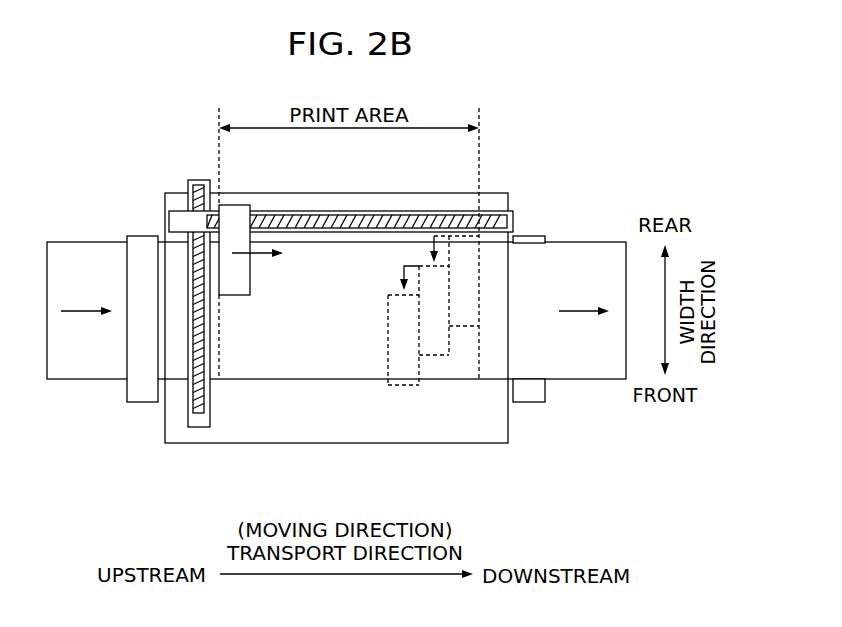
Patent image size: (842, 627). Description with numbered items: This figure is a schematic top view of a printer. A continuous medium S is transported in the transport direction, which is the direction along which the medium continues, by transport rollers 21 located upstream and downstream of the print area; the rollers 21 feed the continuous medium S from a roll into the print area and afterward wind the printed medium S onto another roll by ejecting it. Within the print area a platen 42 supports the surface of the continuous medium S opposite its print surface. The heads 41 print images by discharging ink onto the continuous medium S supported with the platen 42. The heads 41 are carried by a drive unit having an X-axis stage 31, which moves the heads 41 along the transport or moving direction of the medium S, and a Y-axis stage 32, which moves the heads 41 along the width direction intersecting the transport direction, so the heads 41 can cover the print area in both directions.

The continuous medium S is at (68, 242).
The transport rollers 21 is at (141, 236).
The X-axis stage 31 is at (343, 211).
The Y-axis stage 32 is at (199, 427).
The heads 41 is at (235, 205).
The platen 42 is at (480, 443).